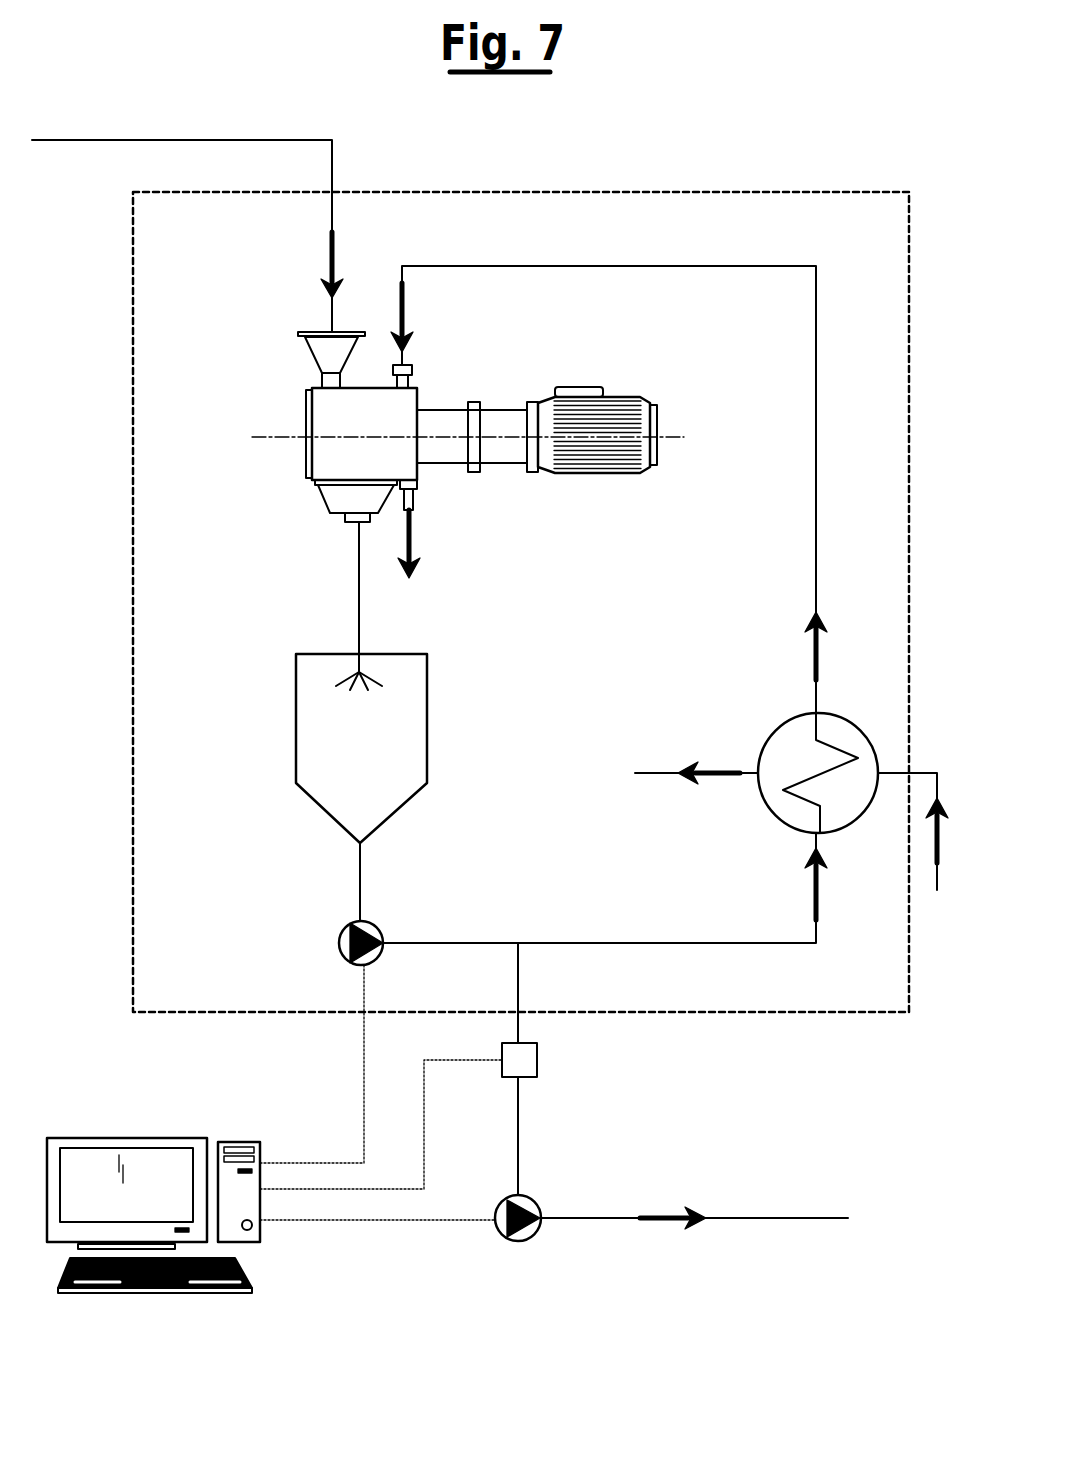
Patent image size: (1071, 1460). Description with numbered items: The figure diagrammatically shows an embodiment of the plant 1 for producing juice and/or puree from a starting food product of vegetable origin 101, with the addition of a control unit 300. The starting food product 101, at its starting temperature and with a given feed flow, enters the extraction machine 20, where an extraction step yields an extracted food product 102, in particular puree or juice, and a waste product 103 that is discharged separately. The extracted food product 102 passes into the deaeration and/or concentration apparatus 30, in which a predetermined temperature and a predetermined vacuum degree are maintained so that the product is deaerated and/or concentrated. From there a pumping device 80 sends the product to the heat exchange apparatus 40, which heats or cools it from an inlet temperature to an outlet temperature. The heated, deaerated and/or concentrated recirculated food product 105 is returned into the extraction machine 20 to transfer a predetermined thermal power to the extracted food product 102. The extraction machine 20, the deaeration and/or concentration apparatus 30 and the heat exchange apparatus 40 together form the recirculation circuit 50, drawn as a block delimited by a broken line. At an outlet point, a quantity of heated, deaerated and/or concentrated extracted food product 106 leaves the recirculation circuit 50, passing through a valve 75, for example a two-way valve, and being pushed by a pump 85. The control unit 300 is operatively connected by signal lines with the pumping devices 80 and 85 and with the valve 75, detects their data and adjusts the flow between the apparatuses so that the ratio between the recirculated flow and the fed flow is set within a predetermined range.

The plant 1 is at (862, 150).
The recirculation circuit 50 is at (680, 195).
The starting food product of vegetable origin 101 is at (92, 139).
The recirculated food product 105 is at (545, 266).
The extraction machine 20 is at (292, 490).
The extracted food product 102 is at (355, 571).
The waste product 103 is at (410, 537).
The deaeration and/or concentration apparatus 30 is at (292, 735).
The heat exchange apparatus 40 is at (757, 709).
The pumping device 80 is at (337, 953).
The valve 75 is at (547, 1066).
The pump 85 is at (545, 1238).
The heated deaerated and/or concentrated extracted food product 106 is at (775, 1220).
The control unit 300 is at (284, 1295).